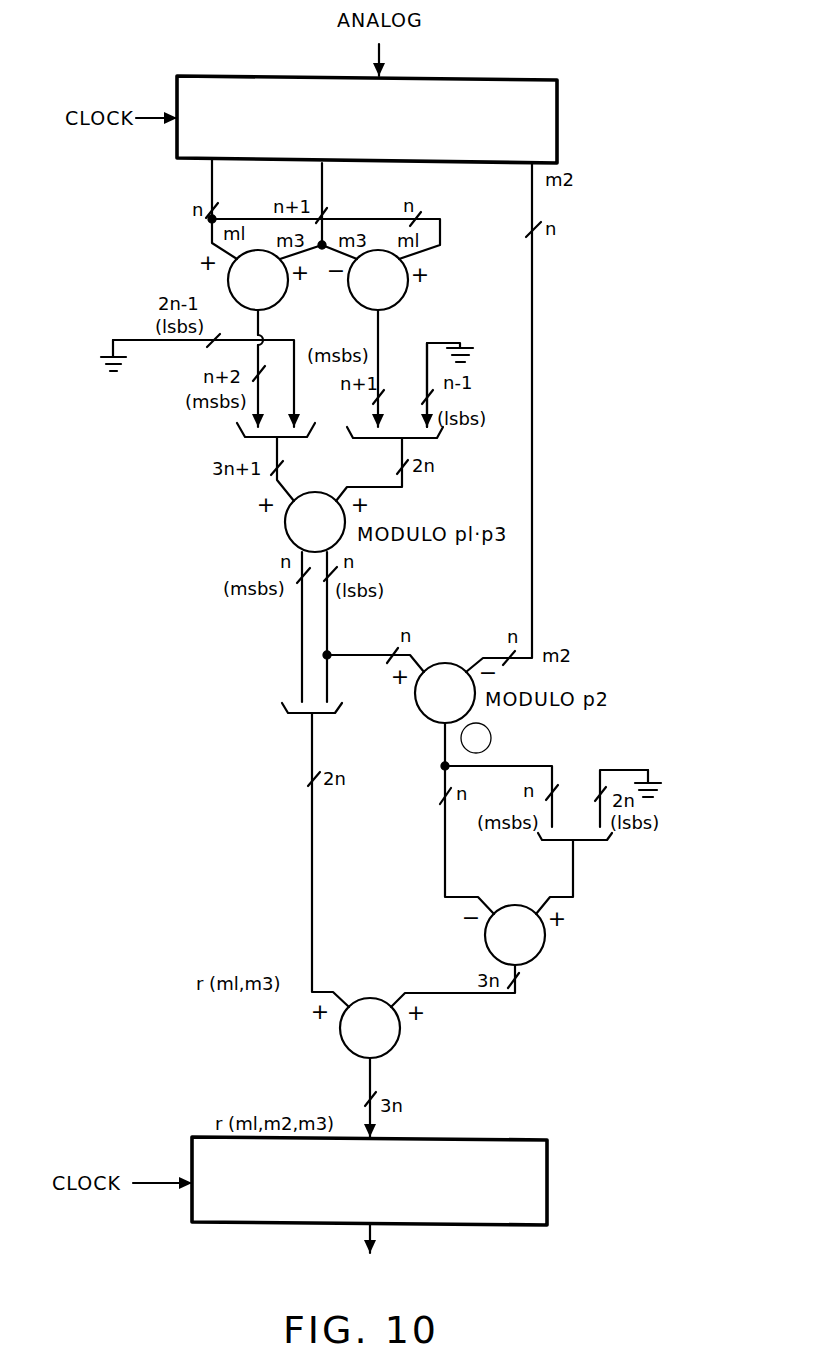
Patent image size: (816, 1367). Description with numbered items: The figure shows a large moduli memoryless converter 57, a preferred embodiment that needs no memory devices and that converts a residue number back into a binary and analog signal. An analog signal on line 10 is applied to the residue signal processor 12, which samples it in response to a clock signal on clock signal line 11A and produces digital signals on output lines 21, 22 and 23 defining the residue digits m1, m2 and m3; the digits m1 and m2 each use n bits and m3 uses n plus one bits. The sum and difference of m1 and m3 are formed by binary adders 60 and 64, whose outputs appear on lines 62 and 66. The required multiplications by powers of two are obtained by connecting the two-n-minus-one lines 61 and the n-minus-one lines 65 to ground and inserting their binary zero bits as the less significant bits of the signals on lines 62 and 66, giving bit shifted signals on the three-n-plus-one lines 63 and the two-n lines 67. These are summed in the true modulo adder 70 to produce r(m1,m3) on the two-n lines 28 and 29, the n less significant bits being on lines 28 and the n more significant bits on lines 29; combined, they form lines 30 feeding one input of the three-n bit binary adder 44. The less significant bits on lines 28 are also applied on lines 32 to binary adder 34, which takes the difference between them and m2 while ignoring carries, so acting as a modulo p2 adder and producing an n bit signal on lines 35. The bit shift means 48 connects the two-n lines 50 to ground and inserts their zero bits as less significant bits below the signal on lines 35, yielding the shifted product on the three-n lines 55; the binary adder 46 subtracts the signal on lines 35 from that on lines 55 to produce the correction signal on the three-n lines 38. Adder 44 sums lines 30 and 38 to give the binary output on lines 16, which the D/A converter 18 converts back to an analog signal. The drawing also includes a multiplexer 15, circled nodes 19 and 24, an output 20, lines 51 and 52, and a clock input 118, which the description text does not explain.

The line 10 is at (379, 50).
The clock signal line 11A is at (142, 115).
The residue signal processor 12 is at (502, 78).
The multiplexer/combiner 15 is at (301, 729).
The lines 16 is at (373, 1078).
The D/A converter 18 is at (517, 1138).
The node 19 is at (537, 988).
The analog output 20 is at (375, 1232).
The output lines 21 is at (212, 193).
The output lines 22 is at (533, 203).
The output lines 23 is at (322, 201).
The node 24 is at (346, 1078).
The lines 28 is at (327, 643).
The lines 29 is at (302, 647).
The lines 30 is at (313, 863).
The lines 32 is at (384, 661).
The binary adder 34 is at (422, 718).
The lines 35 is at (445, 747).
The lines 38 is at (428, 993).
The binary adder 44 is at (397, 1047).
The binary adder 46 is at (543, 953).
The bit shift means 48 is at (636, 755).
The lines 50 is at (624, 770).
The msbs input line 51 is at (550, 764).
The input line to subtractor 52 is at (445, 885).
The lines 55 is at (575, 883).
The large moduli memoryless converter 57 is at (642, 199).
The binary adder 60 is at (288, 287).
The lines 61 is at (294, 397).
The lines 62 is at (262, 318).
The lines 63 is at (278, 481).
The binary adder 64 is at (397, 307).
The lines 65 is at (437, 343).
The lines 66 is at (378, 370).
The lines 67 is at (393, 488).
The modulo adder 70 is at (288, 542).
The clock input 118 is at (173, 1182).